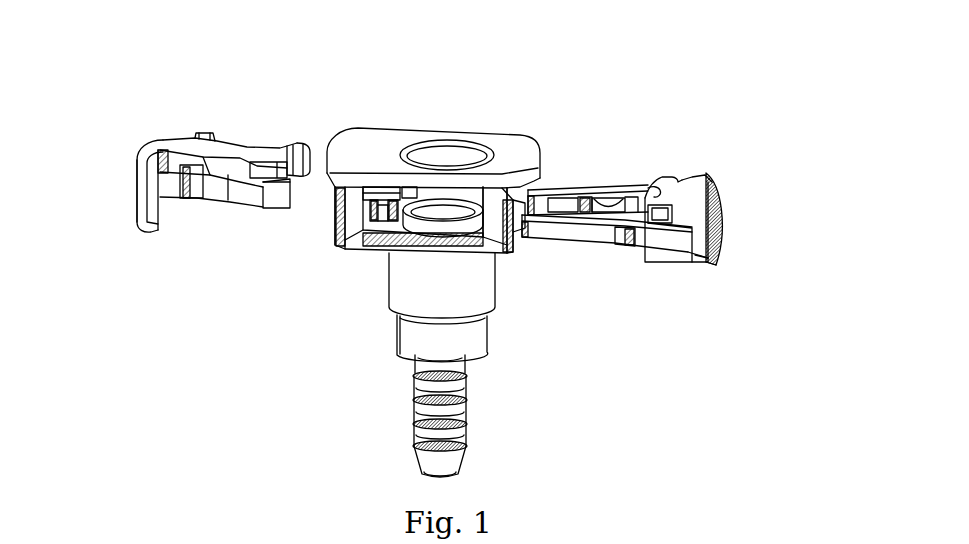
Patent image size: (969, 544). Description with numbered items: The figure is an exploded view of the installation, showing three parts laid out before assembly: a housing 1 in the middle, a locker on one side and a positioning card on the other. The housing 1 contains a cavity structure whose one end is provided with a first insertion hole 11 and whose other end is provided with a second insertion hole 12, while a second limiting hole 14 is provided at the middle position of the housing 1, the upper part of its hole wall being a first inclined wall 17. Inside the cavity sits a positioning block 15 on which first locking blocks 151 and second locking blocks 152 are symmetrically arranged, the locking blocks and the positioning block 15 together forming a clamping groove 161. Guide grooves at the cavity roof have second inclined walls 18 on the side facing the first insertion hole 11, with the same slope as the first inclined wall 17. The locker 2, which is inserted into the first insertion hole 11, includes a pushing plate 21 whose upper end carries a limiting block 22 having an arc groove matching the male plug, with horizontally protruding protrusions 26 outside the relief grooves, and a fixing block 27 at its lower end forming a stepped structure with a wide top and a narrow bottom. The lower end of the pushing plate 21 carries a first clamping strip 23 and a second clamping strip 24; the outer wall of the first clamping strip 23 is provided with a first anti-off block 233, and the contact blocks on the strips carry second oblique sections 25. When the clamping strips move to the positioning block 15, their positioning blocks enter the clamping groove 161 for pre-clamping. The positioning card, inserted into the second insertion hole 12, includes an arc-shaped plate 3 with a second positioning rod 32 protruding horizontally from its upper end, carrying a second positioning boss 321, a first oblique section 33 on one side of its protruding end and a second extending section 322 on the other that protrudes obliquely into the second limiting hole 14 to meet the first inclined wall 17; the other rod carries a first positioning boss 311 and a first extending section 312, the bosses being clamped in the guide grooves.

The housing 1 is at (408, 261).
The first insertion hole 11 is at (513, 245).
The second insertion hole 12 is at (325, 237).
The second limiting hole 14 is at (470, 250).
The positioning block 15 is at (375, 183).
The first locking block 151 is at (392, 228).
The second locking block 152 is at (357, 232).
The clamping groove 161 is at (375, 231).
The first inclined wall 17 is at (487, 200).
The second inclined wall 18 is at (418, 183).
The insert plug 2 is at (675, 247).
The pushing plate 21 is at (737, 215).
The limiting block 22 is at (712, 178).
The first clamping strip 23 is at (690, 258).
The first anti-off block 233 is at (627, 247).
The second clamping strip 24 is at (645, 193).
The second oblique section 25 is at (598, 193).
The protrusion 26 is at (662, 225).
The fixing block 27 is at (717, 253).
The arc-shaped plate 3 is at (188, 164).
The first positioning boss 311 is at (205, 130).
The first extending section 312 is at (300, 135).
The second positioning rod 32 is at (182, 143).
The second positioning boss 321 is at (192, 200).
The second extending section 322 is at (268, 205).
The first oblique section 33 is at (262, 150).